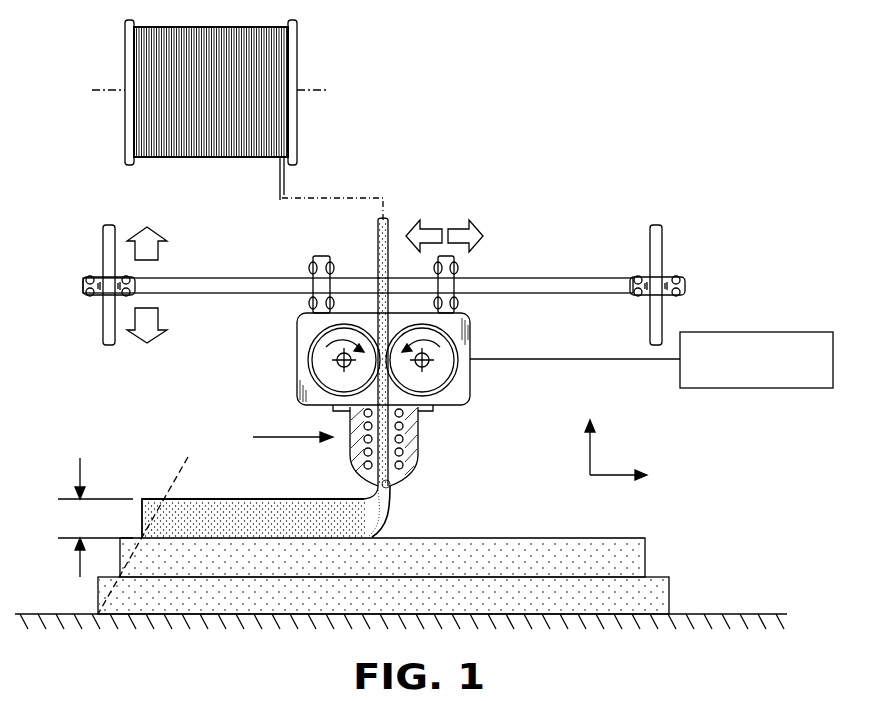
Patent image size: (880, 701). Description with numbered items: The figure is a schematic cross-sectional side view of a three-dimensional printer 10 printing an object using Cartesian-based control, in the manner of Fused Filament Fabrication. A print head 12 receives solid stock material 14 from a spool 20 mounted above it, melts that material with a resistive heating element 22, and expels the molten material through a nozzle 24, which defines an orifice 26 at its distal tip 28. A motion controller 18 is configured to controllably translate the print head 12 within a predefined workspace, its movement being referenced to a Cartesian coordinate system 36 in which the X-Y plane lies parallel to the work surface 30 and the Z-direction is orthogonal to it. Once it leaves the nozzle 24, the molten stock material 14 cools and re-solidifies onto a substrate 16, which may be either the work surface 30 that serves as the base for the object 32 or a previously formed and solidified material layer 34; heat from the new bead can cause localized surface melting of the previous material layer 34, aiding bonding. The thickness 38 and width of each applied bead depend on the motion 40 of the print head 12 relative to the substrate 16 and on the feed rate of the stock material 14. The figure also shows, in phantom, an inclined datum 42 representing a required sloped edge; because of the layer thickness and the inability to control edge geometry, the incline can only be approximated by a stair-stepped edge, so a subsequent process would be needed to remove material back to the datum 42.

The three-dimensional printer 10 is at (606, 90).
The print head 12 is at (470, 347).
The stock material 14 is at (377, 245).
The substrate 16 is at (516, 530).
The motion controller 18 is at (757, 332).
The spool 20 is at (297, 62).
The resistive heating element 22 is at (418, 410).
The nozzle 24 is at (428, 447).
The orifice 26 is at (388, 488).
The distal tip 28 is at (362, 483).
The work surface 30 is at (55, 613).
The object 32 is at (696, 566).
The material layer 34 is at (463, 552).
The Cartesian coordinate system 36 is at (612, 472).
The thickness 38 is at (80, 462).
The motion 40 is at (283, 437).
The datum 42 is at (183, 465).